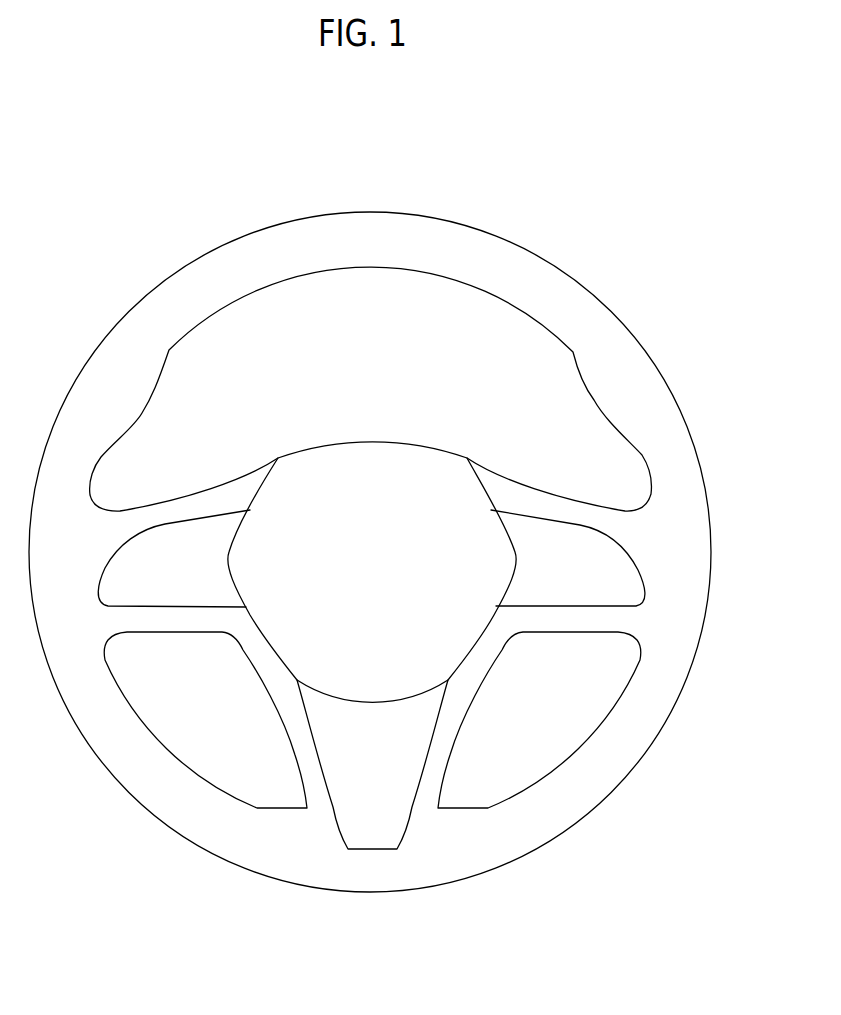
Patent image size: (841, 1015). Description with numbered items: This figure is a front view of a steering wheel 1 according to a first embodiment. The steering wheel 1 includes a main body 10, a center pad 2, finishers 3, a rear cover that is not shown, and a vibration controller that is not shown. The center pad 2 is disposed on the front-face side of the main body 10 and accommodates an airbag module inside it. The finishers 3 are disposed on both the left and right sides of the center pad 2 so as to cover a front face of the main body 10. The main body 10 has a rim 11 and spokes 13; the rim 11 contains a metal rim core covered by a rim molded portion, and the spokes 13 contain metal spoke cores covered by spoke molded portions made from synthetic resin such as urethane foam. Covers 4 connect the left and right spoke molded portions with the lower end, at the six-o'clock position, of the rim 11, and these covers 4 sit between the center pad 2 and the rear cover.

The steering wheel 1 is at (228, 172).
The center pad 2 is at (373, 487).
The finishers 3 is at (181, 583).
The covers 4 is at (310, 771).
The main body 10 is at (541, 256).
The rim 11 is at (364, 236).
The spokes 13 is at (188, 508).